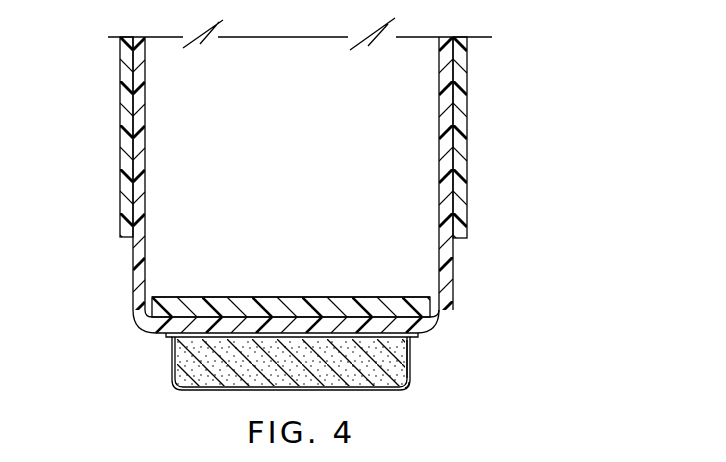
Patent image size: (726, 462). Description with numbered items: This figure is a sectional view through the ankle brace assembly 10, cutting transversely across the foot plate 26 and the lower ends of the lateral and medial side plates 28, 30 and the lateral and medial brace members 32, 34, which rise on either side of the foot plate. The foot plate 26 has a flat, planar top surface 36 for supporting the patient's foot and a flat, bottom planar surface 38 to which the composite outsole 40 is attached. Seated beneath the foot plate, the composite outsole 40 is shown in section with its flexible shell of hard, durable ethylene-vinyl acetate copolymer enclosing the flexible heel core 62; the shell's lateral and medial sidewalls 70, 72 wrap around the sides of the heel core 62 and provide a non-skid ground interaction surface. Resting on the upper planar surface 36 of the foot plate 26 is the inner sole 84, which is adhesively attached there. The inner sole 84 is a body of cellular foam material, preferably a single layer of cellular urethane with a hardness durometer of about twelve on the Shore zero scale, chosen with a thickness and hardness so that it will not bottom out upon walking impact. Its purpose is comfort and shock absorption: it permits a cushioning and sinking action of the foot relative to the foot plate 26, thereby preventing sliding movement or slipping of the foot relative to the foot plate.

The ankle brace assembly 10 is at (544, 72).
The foot plate 26 is at (257, 312).
The lateral side plate 28 is at (140, 156).
The medial side plate 30 is at (440, 162).
The lateral brace member 32 is at (120, 96).
The medial brace member 34 is at (467, 158).
The top surface 36 is at (192, 312).
The bottom planar surface 38 is at (412, 365).
The composite outsole 40 is at (166, 377).
The flexible heel core 62 is at (220, 372).
The lateral sidewall 70 is at (174, 367).
The medial sidewall 72 is at (412, 379).
The inner sole 84 is at (373, 290).